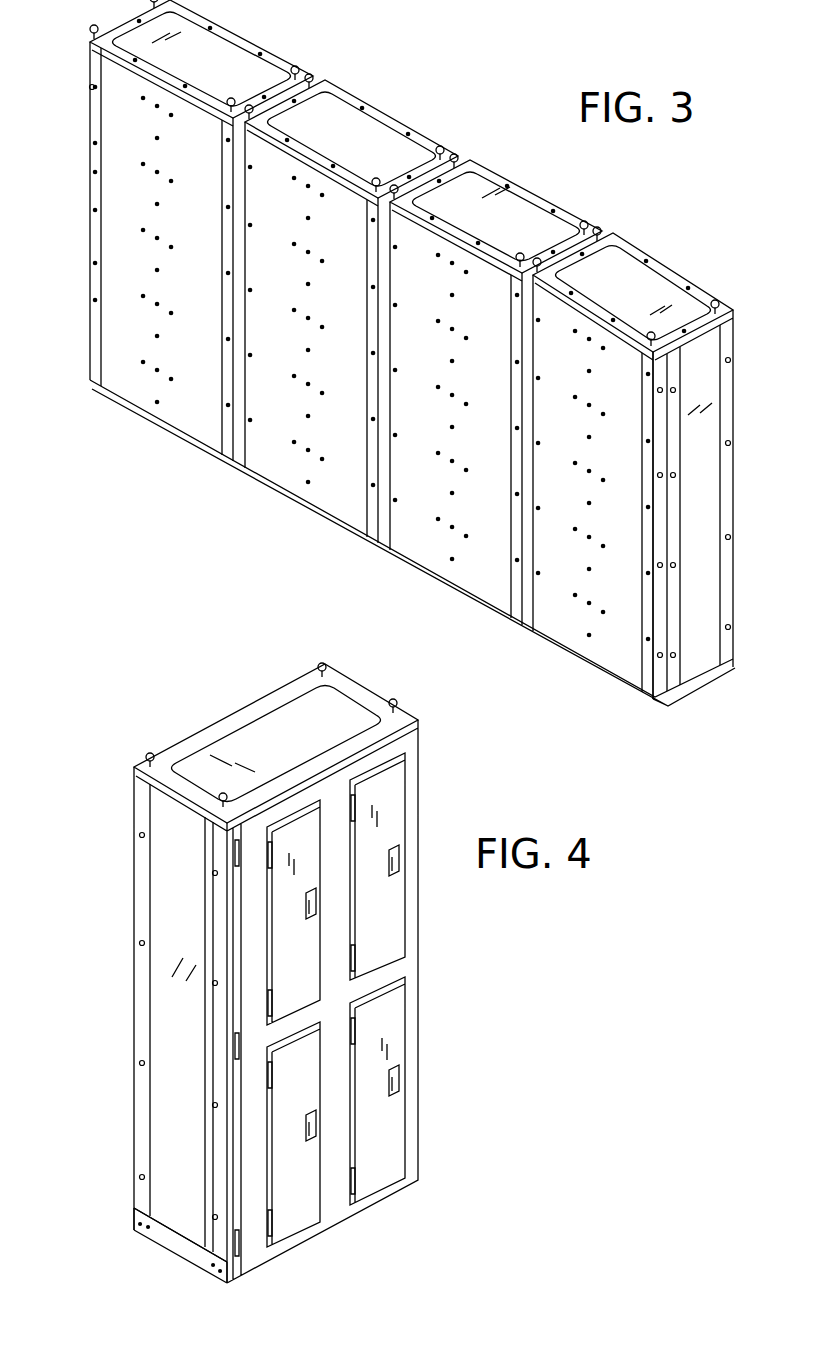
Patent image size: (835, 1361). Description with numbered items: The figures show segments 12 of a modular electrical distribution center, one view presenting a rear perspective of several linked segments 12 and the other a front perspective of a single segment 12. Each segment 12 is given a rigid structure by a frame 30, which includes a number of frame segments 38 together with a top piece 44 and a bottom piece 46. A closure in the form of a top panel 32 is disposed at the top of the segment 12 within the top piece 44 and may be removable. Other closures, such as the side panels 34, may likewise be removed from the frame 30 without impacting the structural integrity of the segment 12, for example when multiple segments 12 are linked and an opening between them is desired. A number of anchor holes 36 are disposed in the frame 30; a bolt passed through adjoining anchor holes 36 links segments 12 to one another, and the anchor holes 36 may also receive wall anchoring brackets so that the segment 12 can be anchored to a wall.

In FIG. 3, the segment 12 is at (310, 110).
In FIG. 4, the segment 12 is at (195, 706).
In FIG. 3, the frame 30 is at (700, 338).
In FIG. 4, the frame 30 is at (172, 803).
In FIG. 3, the top panel 32 is at (213, 80).
In FIG. 4, the top panel 32 is at (285, 758).
In FIG. 3, the side panel 34 is at (715, 508).
In FIG. 4, the side panel 34 is at (192, 915).
In FIG. 3, the anchor holes 36 is at (88, 86).
In FIG. 4, the anchor holes 36 is at (137, 937).
In FIG. 3, the frame segments 38 is at (657, 633).
In FIG. 4, the frame segments 38 is at (138, 1193).
In FIG. 3, the top piece 44 is at (477, 170).
In FIG. 4, the top piece 44 is at (233, 712).
In FIG. 3, the bottom piece 46 is at (480, 600).
In FIG. 4, the bottom piece 46 is at (188, 1255).